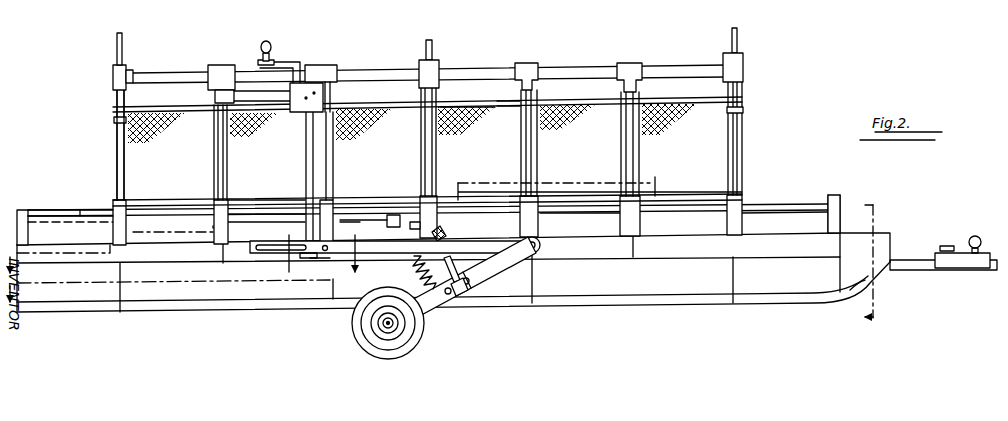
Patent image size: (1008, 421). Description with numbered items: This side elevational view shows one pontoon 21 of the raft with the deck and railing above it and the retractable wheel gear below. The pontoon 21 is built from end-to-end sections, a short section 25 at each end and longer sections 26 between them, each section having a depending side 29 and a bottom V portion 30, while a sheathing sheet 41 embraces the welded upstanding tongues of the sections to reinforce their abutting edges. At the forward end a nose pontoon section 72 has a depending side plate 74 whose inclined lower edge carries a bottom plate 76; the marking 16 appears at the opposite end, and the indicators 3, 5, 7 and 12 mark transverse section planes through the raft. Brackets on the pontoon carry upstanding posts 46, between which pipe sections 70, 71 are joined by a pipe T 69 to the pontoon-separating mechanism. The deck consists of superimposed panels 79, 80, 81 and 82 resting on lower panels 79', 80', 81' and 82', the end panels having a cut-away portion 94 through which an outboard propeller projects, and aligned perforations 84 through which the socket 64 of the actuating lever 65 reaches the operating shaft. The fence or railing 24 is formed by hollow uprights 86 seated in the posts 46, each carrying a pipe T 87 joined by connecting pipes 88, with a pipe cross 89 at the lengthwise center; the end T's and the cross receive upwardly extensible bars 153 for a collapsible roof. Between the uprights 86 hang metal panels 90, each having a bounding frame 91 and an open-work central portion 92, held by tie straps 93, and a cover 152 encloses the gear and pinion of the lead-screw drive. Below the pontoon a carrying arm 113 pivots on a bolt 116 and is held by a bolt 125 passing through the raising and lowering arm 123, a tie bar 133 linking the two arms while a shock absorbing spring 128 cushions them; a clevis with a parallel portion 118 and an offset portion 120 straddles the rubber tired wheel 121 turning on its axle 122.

The pontoon 21 is at (16, 318).
The sheathing sheet 41 is at (676, 262).
The pontoon section 25 is at (110, 316).
The depending side 29 is at (83, 293).
The bottom V portion 30 is at (170, 307).
The pontoon section 26 is at (278, 313).
The bow end cap 16 is at (22, 233).
The side plate 74 is at (850, 243).
The forward pontoon section 72 is at (891, 233).
The bottom plate 76 is at (876, 280).
The section line 12- 12 is at (880, 263).
The deck panel 79 is at (428, 191).
The deck panel 80 is at (600, 180).
The section line 3- 3 is at (332, 217).
The section line 5- 5 is at (170, 283).
The lower panel section 82' is at (130, 229).
The lower panel section 81' is at (266, 226).
The lower panel section 80' is at (580, 218).
The upstanding post 46 is at (641, 220).
The lower panel section 79' is at (785, 218).
The fence or railing 24 is at (98, 128).
The hollow upright 86 is at (118, 158).
The connecting pipe 88 is at (167, 76).
The pipe T 87 is at (234, 57).
The upwardly extensible bar 153 is at (121, 50).
The pipe cross 89 is at (439, 68).
The tie strap 93 is at (537, 100).
The aligned perforation 84 is at (743, 68).
The actuating lever 65 is at (276, 62).
The cover 152 is at (297, 113).
The socket 64 is at (313, 68).
The central portion 92 is at (452, 132).
The metal panel 90 is at (484, 125).
The peripheral frame 91 is at (507, 104).
The upper deck panel 82 is at (70, 195).
The cut-away portion 94 is at (88, 209).
The deck panel 81 is at (266, 188).
The pipe section 70 is at (349, 207).
The pipe T 69 is at (388, 213).
The pipe section 71 is at (421, 225).
The raising and lowering arm 123 is at (493, 248).
The section line 7-7 / slide bar 7 is at (391, 246).
The securing bolt 125 is at (318, 262).
The pivot bolt 116 is at (542, 247).
The carrying arm 113 is at (513, 263).
The tie bar 133 is at (472, 272).
The parallel portion 118 is at (467, 307).
The shock absorbing spring 128 is at (418, 274).
The offset fork portion 120 is at (421, 321).
The wheel 121 is at (402, 350).
The axle 122 is at (386, 327).